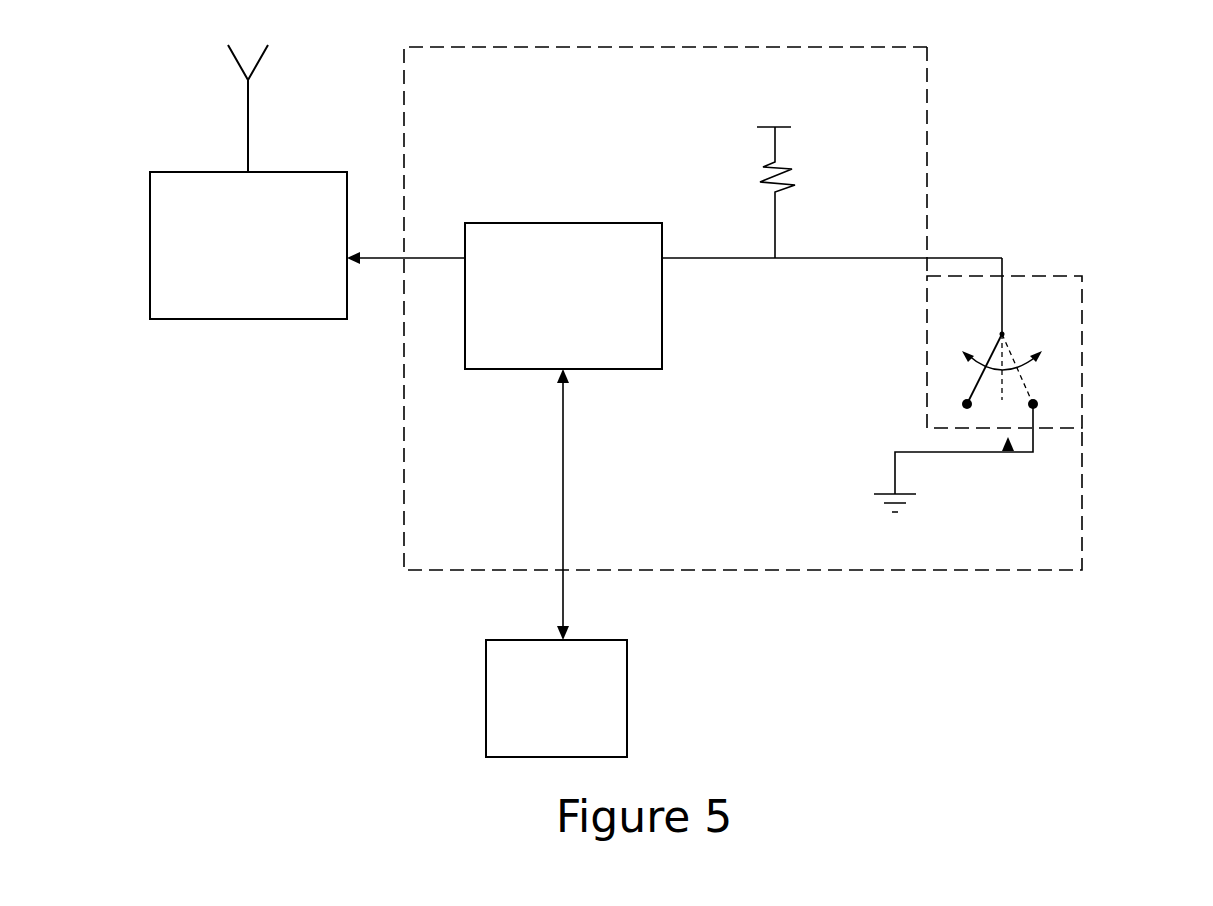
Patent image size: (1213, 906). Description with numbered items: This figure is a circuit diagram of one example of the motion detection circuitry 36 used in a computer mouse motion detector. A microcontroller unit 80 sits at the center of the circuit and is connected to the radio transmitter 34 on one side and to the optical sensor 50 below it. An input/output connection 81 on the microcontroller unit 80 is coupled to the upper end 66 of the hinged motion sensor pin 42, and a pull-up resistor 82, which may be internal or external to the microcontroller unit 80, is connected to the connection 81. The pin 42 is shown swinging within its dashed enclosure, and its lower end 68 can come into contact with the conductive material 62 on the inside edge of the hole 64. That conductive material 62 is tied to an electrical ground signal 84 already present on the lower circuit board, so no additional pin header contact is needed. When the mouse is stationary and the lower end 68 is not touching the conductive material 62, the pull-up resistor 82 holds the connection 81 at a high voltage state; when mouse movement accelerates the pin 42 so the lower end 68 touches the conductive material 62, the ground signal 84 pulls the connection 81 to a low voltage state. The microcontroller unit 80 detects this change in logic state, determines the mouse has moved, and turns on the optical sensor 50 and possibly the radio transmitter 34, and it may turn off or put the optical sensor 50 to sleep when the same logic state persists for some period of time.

The radio transmitter 34 is at (237, 320).
The motion detection circuitry 36 is at (927, 47).
The microcontroller unit 80 is at (510, 222).
The input/output connection 81 is at (712, 258).
The pull-up resistor 82 is at (793, 170).
The upper end of motion sensor pin 66 is at (1002, 283).
The motion sensor pin 42 is at (1082, 303).
The lower end of motion sensor pin 68 is at (977, 380).
The conductive material 62 is at (963, 403).
The electrical ground signal 84 is at (942, 452).
The hole 64 is at (1008, 450).
The optical sensor 50 is at (627, 652).